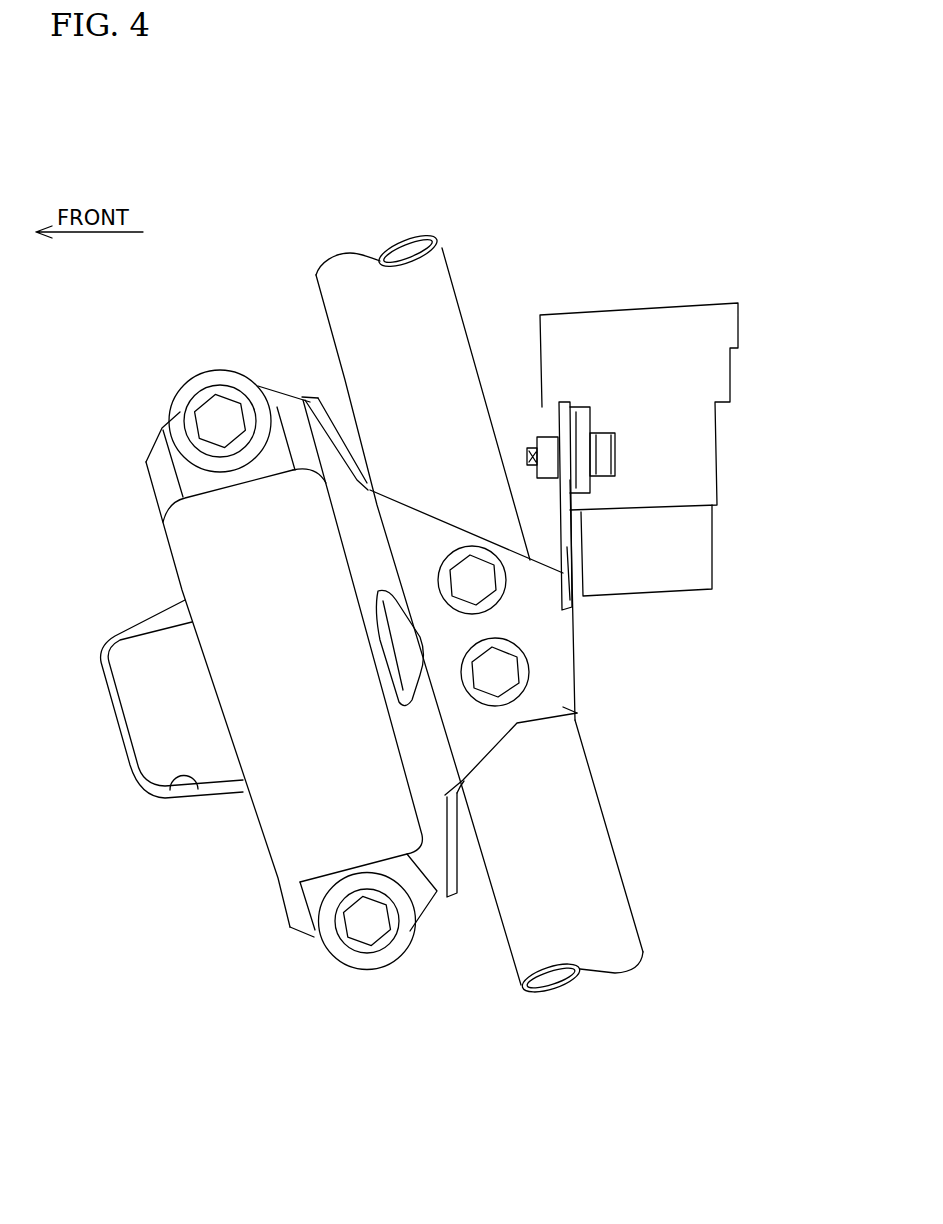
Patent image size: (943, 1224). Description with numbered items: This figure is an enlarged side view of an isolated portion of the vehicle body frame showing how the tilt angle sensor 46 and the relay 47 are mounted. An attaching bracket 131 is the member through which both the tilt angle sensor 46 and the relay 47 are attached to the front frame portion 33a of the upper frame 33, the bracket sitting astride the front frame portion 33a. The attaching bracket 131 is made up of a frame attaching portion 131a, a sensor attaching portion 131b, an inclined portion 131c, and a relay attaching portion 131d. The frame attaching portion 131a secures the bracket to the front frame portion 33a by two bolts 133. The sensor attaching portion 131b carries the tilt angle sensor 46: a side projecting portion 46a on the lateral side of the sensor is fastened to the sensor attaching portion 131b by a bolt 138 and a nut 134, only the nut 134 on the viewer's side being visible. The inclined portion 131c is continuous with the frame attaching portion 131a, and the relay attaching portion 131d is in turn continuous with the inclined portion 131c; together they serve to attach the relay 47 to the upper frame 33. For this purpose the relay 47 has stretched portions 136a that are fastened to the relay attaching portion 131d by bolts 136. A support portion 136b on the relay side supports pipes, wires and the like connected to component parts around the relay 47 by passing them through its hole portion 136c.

The upper frame 33 is at (304, 298).
The front frame portion 33a is at (433, 277).
The tilt angle sensor 46 is at (662, 296).
The side projecting portion 46a is at (579, 402).
The relay 47 is at (155, 565).
The attaching bracket 131 is at (490, 773).
The frame attaching portion 131a is at (563, 707).
The sensor attaching portion 131b is at (567, 548).
The inclined portion 131c is at (449, 805).
The relay attaching portion 131d is at (287, 397).
The bolt 133 is at (483, 585).
The nut 134 is at (540, 437).
The bolt 136 is at (210, 413).
The stretched portion 136a is at (163, 430).
The support portion 136b is at (113, 700).
The hole portion 136c is at (197, 790).
The bolt 138 is at (613, 453).